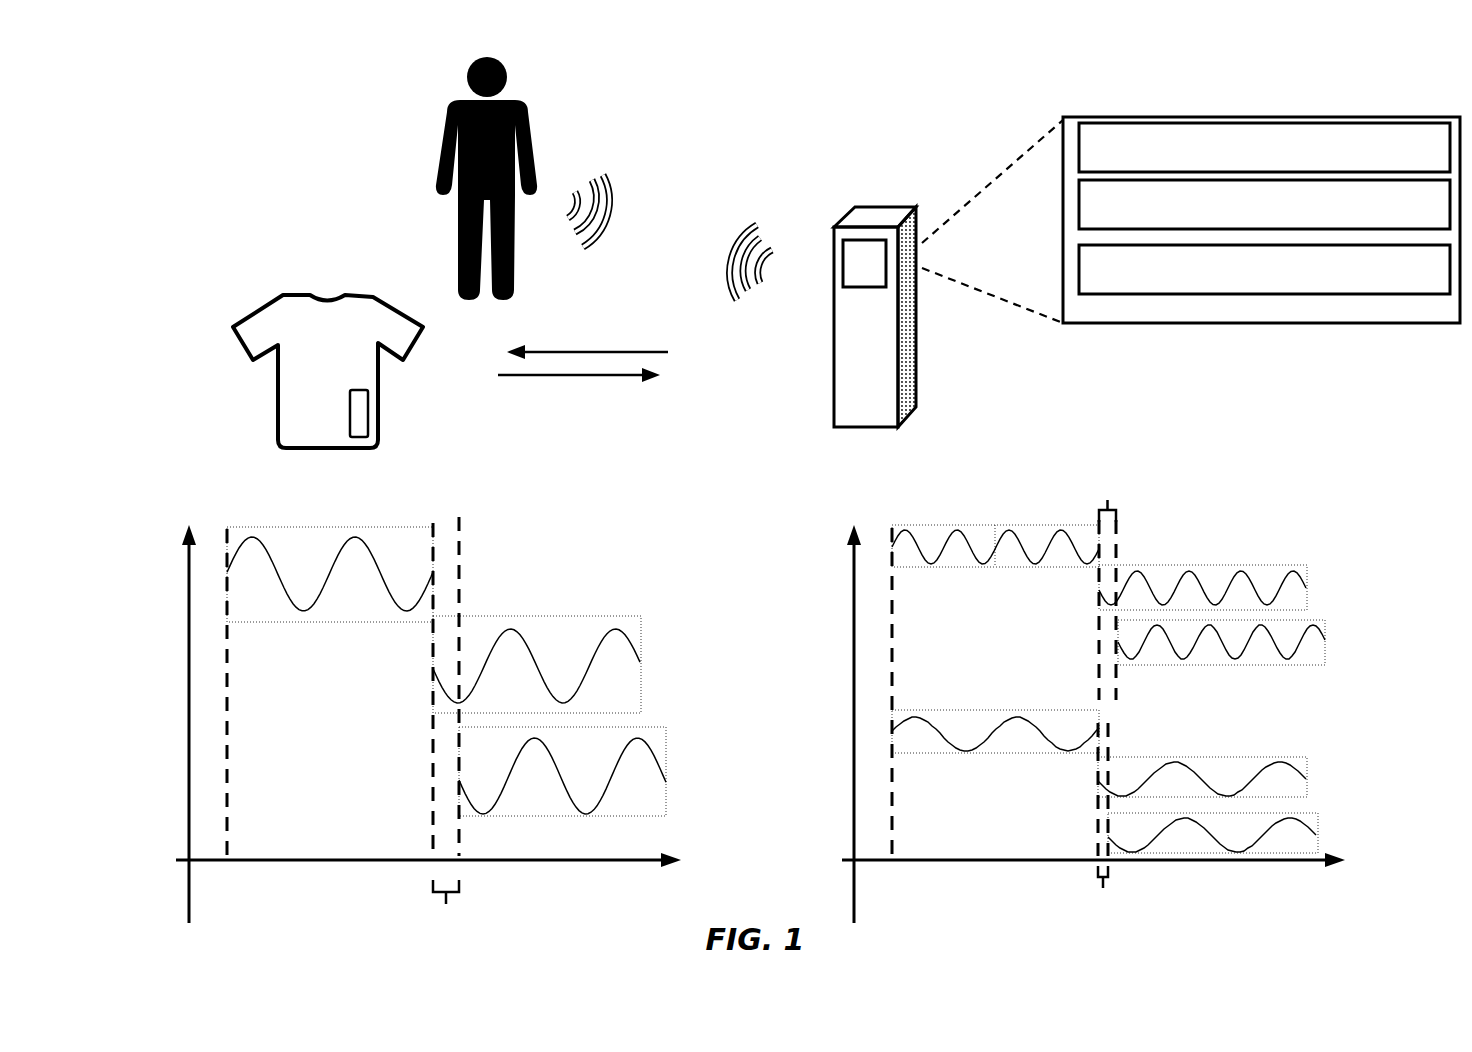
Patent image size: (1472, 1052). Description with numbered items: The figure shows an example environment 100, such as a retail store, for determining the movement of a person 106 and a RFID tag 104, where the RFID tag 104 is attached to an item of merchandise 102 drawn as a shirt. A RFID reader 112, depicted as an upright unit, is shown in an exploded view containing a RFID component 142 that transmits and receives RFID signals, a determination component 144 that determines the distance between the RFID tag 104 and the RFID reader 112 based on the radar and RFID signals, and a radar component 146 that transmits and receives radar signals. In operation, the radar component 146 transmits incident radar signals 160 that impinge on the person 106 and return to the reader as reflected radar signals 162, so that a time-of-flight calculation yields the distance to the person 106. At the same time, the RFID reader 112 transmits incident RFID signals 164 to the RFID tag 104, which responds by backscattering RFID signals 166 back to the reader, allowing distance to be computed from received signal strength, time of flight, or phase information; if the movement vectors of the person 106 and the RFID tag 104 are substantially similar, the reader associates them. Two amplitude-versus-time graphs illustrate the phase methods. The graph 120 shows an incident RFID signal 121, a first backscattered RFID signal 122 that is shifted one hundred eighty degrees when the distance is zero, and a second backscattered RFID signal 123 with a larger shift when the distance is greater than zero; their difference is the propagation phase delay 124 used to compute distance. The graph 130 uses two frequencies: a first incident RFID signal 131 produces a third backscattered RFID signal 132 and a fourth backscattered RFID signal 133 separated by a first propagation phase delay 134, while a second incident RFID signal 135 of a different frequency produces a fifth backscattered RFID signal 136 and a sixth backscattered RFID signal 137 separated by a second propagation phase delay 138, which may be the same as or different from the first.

The environment 100 is at (168, 92).
The item of merchandise 102 is at (319, 342).
The RFID tag 104 is at (350, 400).
The person 106 is at (508, 100).
The RFID reader 112 is at (902, 207).
The graph 120 is at (384, 698).
The incident RFID signal 121 is at (342, 560).
The first backscattered RFID signal 122 is at (598, 650).
The second backscattered RFID signal 123 is at (606, 790).
The propagation phase delay 124 is at (446, 907).
The graph 130 is at (1060, 694).
The first incident RFID signal 131 is at (1000, 540).
The third backscattered RFID signal 132 is at (1238, 579).
The fourth backscattered RFID signal 133 is at (1298, 648).
The first propagation phase delay 134 is at (1107, 661).
The second incident RFID signal 135 is at (1008, 721).
The fifth backscattered RFID signal 136 is at (1300, 772).
The sixth backscattered RFID signal 137 is at (1310, 830).
The second propagation phase delay 138 is at (1103, 893).
The RFID component 142 is at (1264, 147).
The determination component 144 is at (1264, 204).
The radar component 146 is at (1264, 269).
The incident radar signals 160 is at (760, 228).
The reflected radar signals 162 is at (607, 178).
The incident RFID signals 164 is at (577, 351).
The backscattered RFID signals 166 is at (572, 376).